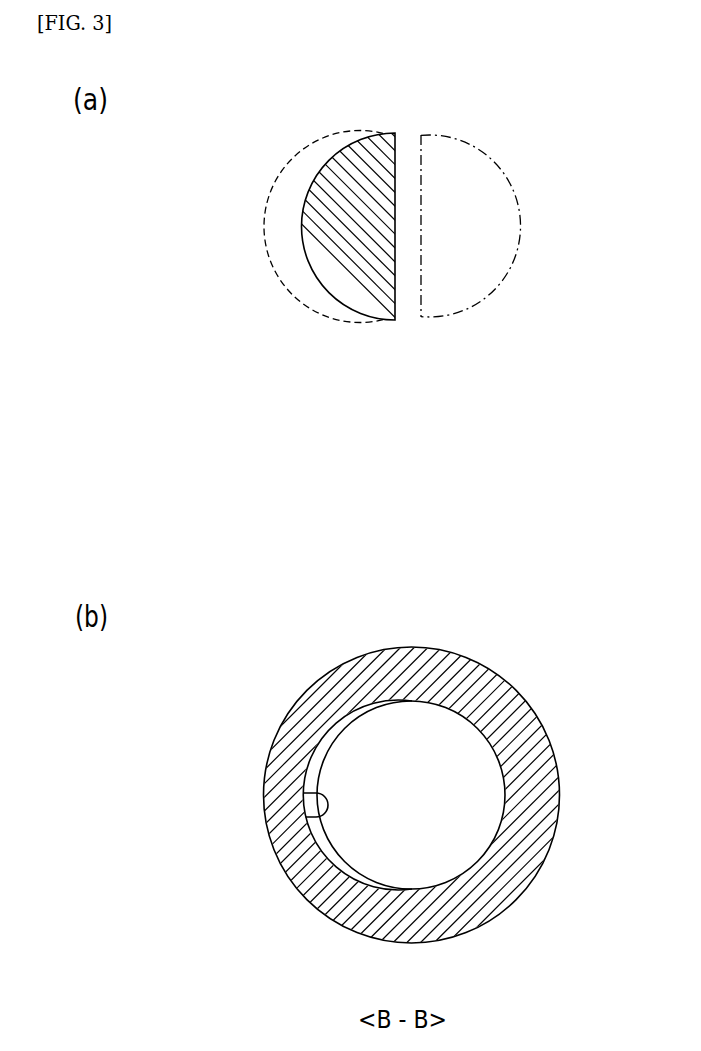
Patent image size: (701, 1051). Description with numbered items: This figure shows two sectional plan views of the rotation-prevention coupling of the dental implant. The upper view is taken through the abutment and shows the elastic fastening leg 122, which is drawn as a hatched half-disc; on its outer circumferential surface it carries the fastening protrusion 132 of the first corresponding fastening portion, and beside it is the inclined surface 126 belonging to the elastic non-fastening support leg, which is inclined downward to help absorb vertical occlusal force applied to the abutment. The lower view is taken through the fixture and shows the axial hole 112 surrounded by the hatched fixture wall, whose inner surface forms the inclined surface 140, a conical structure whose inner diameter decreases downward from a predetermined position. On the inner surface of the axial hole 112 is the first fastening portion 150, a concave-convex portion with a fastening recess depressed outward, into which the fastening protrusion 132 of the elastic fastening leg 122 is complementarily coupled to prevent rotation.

The fastening protrusion 132 is at (311, 195).
The elastic fastening leg 122 is at (318, 232).
The inclined surface 126 is at (497, 230).
The inclined surface 140 is at (515, 692).
The axial hole 112 is at (436, 795).
The first fastening portion 150 is at (310, 816).